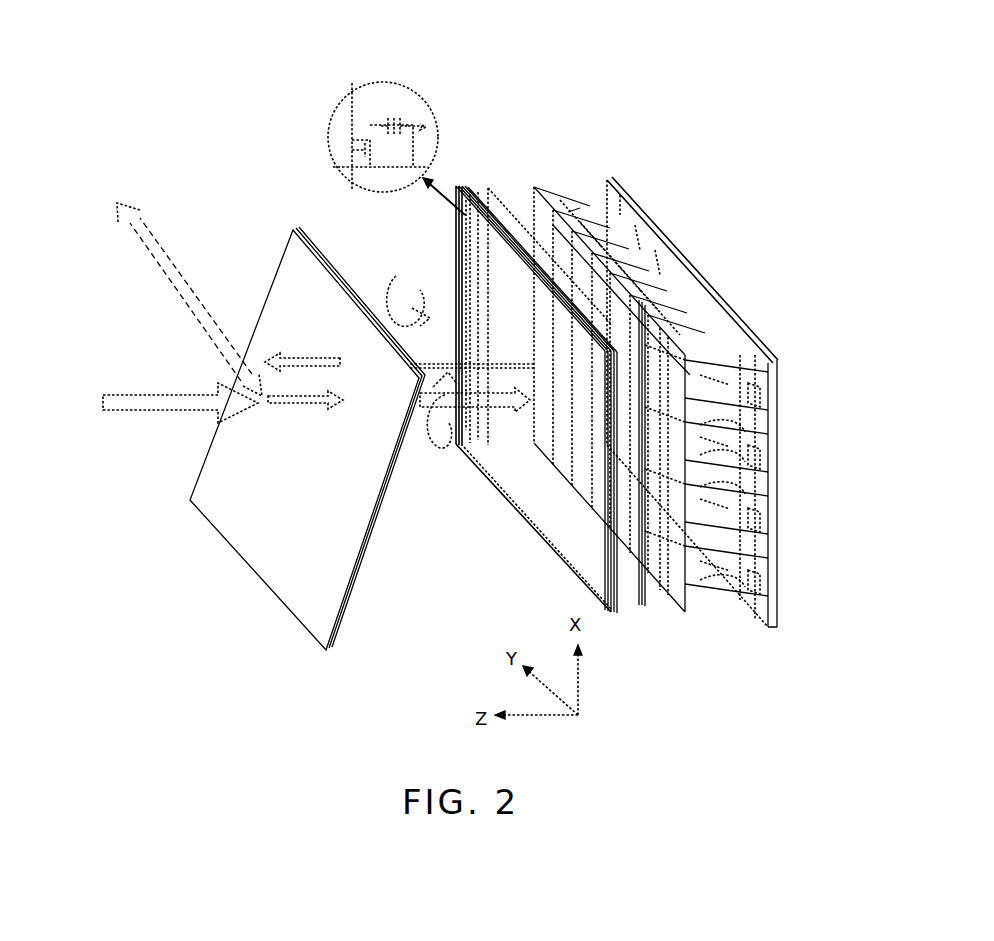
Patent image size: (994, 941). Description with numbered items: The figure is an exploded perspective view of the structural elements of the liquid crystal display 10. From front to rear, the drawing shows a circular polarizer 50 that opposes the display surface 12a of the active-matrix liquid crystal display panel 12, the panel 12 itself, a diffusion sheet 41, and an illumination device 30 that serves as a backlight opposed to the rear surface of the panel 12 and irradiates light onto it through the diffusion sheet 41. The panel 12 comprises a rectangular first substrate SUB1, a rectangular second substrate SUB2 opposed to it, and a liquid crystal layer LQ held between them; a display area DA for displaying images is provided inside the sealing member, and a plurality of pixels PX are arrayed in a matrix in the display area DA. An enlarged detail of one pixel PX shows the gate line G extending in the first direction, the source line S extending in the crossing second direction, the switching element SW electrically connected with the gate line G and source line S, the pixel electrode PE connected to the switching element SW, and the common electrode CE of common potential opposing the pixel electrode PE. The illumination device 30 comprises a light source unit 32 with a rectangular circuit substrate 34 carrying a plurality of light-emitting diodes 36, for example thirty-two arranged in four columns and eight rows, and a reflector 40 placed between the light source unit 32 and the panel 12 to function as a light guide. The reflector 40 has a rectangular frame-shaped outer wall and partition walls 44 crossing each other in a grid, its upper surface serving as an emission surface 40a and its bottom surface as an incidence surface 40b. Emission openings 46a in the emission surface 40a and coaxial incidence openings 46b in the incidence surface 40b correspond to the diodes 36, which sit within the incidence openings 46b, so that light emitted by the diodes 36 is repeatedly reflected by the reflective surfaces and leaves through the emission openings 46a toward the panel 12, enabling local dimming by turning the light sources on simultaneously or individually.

The liquid crystal display 10 is at (592, 102).
The liquid crystal display panel 12 is at (552, 554).
The display surface 12a is at (487, 474).
The illumination device 30 is at (711, 624).
The light source unit 32 is at (750, 312).
The circuit substrate 34 is at (722, 300).
The light-emitting diode 36 is at (640, 215).
The reflector 40 is at (560, 196).
The emission surface 40a is at (660, 598).
The incidence surface 40b is at (760, 350).
The diffusion sheet 41 is at (638, 604).
The partition wall 44 is at (612, 230).
The emission opening 46a is at (690, 270).
The incidence opening 46b is at (790, 421).
The circular polarizer 50 is at (328, 612).
The pixel PX is at (352, 83).
The pixel electrode PE is at (378, 120).
The liquid crystal layer LQ is at (400, 118).
The common electrode CE is at (412, 122).
The gate line G is at (348, 112).
The source line S is at (393, 185).
The switching element SW is at (353, 177).
The first substrate SUB1 is at (507, 200).
The second substrate SUB2 is at (492, 195).
The display area DA is at (459, 274).